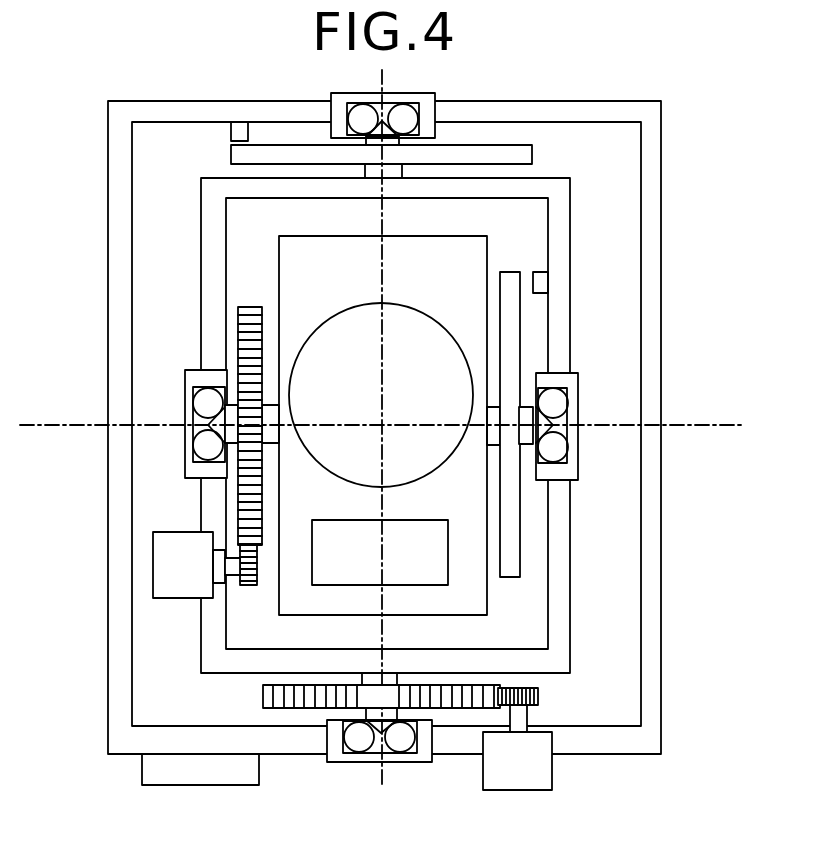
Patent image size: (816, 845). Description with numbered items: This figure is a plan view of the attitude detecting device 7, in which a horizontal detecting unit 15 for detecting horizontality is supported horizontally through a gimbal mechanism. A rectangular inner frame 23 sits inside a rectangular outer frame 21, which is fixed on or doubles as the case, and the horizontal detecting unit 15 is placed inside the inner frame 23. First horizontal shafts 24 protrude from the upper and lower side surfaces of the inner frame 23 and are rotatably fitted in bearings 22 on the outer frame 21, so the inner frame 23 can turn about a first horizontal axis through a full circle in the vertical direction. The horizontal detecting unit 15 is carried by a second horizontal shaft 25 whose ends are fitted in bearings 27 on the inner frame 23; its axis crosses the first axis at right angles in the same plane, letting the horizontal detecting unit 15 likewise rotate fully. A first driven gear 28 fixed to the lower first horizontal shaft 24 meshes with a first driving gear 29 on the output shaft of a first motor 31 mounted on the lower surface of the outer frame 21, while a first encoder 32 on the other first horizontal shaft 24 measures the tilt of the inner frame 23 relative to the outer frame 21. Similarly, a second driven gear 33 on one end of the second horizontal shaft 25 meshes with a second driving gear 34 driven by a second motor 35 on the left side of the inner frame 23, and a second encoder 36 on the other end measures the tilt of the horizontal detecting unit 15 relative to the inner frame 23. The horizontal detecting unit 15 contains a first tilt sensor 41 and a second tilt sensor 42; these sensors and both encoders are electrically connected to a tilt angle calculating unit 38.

The attitude detecting device 7 is at (176, 91).
The horizontal detecting unit 15 is at (477, 236).
The outer frame 21 is at (590, 101).
The bearing 22 is at (432, 94).
The inner frame 23 is at (555, 178).
The first horizontal shaft 24 is at (412, 142).
The second horizontal shaft 25 is at (525, 407).
The bearing 27 is at (186, 375).
The first driven gear 28 is at (263, 690).
The first driving gear 29 is at (540, 697).
The first motor 31 is at (552, 768).
The first encoder 32 is at (253, 139).
The second driven gear 33 is at (248, 307).
The second driving gear 34 is at (250, 586).
The second motor 35 is at (165, 598).
The second encoder 36 is at (524, 257).
The tilt angle calculating unit 38 is at (142, 777).
The first tilt sensor 41 is at (418, 306).
The second tilt sensor 42 is at (422, 520).